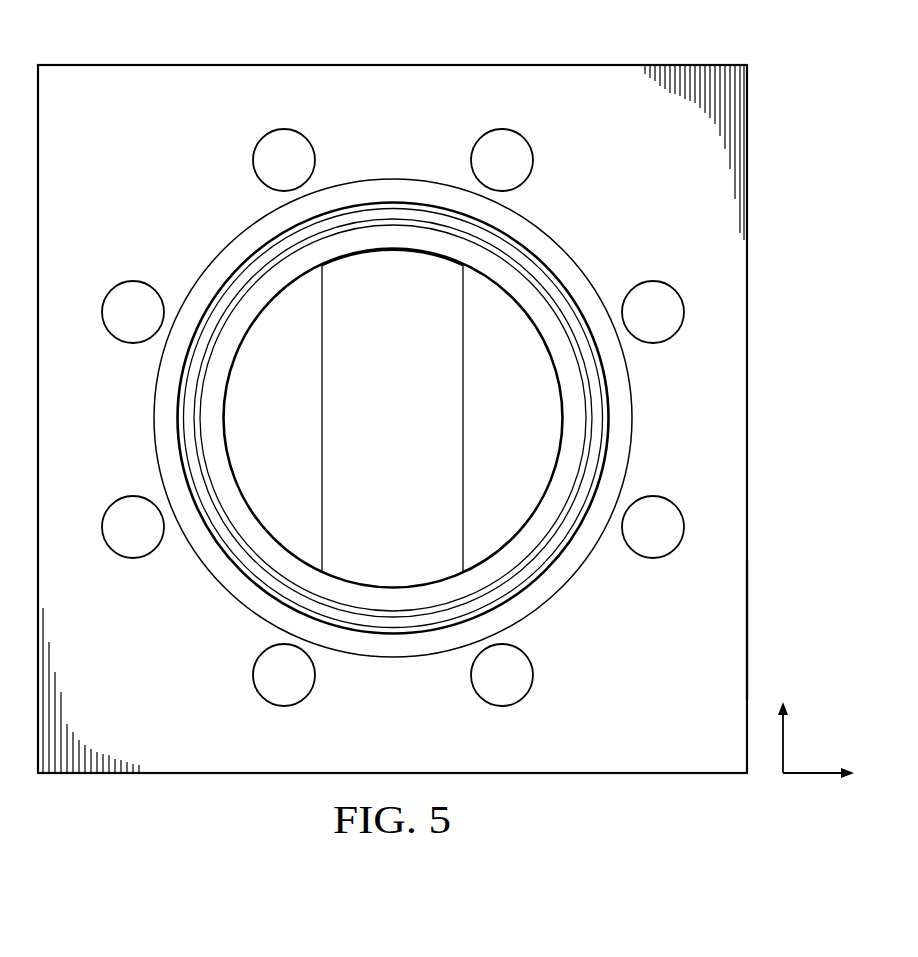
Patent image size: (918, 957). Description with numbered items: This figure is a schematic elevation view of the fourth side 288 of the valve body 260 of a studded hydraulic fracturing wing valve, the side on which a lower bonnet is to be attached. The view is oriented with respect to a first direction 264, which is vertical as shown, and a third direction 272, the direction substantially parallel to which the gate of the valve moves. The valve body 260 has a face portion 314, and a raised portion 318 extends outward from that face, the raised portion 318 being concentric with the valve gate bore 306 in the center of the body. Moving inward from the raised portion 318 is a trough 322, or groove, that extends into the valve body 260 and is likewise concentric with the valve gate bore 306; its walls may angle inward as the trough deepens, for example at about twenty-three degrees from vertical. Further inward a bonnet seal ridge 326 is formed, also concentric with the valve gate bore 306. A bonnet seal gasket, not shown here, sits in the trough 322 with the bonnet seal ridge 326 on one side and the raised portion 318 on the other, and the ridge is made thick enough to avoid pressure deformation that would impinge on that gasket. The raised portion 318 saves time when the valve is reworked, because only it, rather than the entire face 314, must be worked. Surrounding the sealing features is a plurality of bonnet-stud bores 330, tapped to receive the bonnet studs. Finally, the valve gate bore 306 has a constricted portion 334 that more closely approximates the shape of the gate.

The valve body 260 is at (667, 775).
The first direction 264 is at (785, 735).
The third direction 272 is at (812, 775).
The fourth side 288 is at (739, 627).
The valve gate bore 306 is at (382, 250).
The face portion 314 is at (579, 72).
The raised portion 318 is at (221, 573).
The trough 322 is at (247, 563).
The bonnet seal ridge 326 is at (228, 485).
The bonnet-stud bores 330 is at (161, 297).
The constricted portion 334 is at (323, 366).